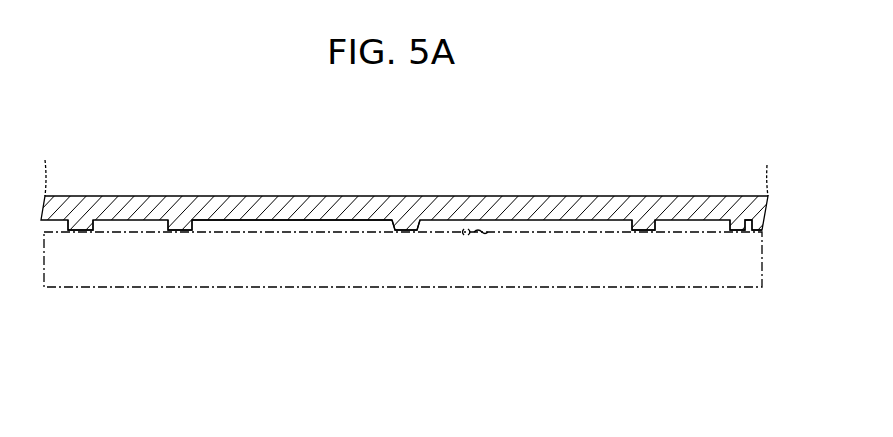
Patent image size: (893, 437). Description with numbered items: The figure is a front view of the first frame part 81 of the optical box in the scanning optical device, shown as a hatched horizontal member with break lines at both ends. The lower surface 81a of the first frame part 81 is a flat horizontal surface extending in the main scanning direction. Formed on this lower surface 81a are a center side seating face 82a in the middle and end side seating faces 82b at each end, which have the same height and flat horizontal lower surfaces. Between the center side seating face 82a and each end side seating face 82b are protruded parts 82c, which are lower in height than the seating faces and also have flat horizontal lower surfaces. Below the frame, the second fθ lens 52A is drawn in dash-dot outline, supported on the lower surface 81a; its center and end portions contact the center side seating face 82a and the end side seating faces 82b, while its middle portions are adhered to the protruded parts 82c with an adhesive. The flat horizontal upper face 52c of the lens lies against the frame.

The first frame part 81 is at (337, 195).
The lower surface 81a is at (265, 229).
The center side seating face 82a is at (400, 232).
The end side seating faces 82b is at (78, 232).
The protruded parts 82c is at (180, 232).
The second fθ lens 52A is at (326, 280).
The upper face 52c is at (484, 234).